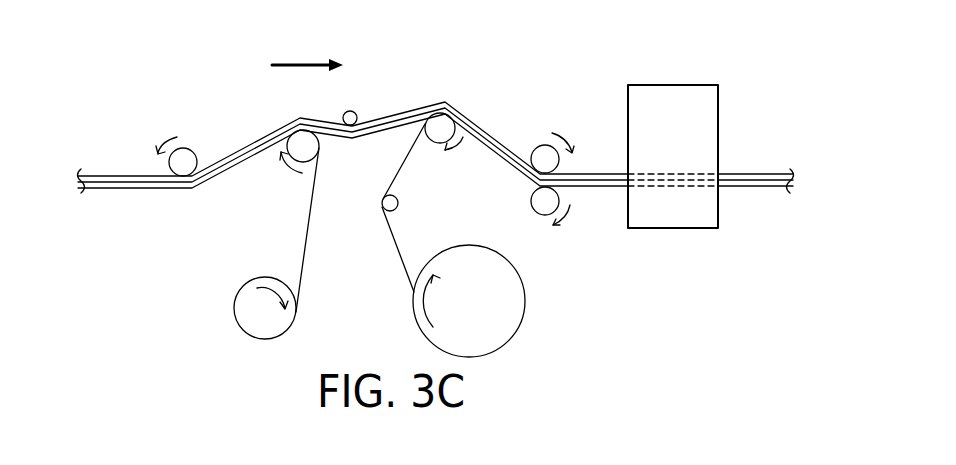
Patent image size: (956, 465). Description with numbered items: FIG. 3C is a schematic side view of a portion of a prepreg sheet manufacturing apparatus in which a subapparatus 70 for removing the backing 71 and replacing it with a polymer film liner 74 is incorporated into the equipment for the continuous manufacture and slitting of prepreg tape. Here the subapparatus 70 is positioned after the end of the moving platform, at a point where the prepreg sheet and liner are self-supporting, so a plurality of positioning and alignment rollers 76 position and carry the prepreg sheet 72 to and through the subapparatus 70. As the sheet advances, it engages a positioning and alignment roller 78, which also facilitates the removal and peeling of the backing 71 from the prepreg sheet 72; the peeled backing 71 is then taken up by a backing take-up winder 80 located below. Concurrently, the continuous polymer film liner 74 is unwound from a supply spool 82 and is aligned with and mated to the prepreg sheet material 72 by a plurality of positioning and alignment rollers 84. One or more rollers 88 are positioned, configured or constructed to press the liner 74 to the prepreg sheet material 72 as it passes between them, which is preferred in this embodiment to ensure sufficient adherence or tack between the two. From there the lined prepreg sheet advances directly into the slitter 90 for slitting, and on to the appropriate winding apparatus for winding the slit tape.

The subapparatus 70 is at (495, 68).
The backing 71 is at (162, 190).
The prepreg sheet 72 is at (125, 175).
The polymer film liner 74 is at (395, 245).
The positioning and alignment rollers 76 is at (193, 148).
The positioning and alignment roller 78 is at (305, 146).
The backing take-up winder 80 is at (234, 300).
The supply spool 82 is at (524, 322).
The positioning and alignment rollers 84 is at (445, 112).
The rollers 88 is at (548, 145).
The slitter 90 is at (718, 127).